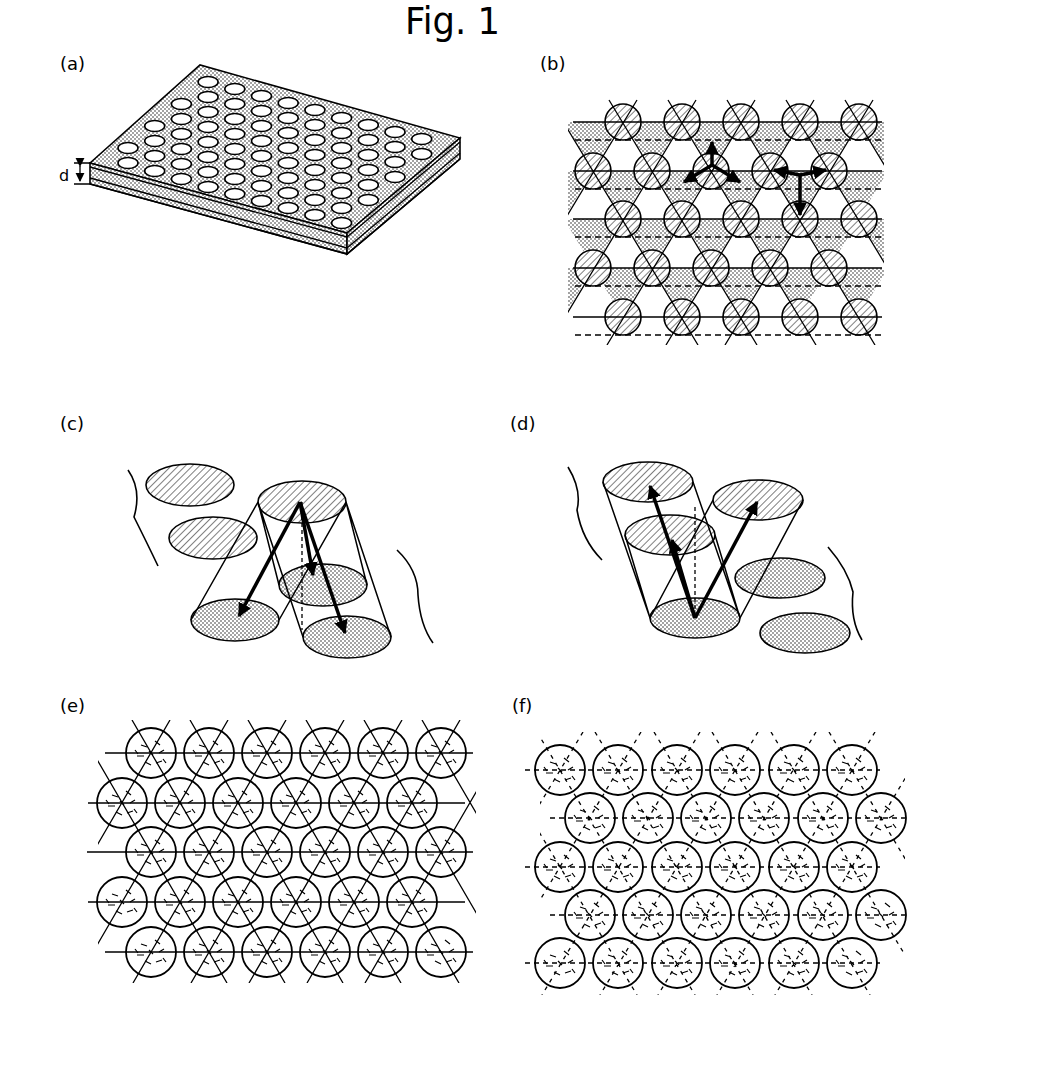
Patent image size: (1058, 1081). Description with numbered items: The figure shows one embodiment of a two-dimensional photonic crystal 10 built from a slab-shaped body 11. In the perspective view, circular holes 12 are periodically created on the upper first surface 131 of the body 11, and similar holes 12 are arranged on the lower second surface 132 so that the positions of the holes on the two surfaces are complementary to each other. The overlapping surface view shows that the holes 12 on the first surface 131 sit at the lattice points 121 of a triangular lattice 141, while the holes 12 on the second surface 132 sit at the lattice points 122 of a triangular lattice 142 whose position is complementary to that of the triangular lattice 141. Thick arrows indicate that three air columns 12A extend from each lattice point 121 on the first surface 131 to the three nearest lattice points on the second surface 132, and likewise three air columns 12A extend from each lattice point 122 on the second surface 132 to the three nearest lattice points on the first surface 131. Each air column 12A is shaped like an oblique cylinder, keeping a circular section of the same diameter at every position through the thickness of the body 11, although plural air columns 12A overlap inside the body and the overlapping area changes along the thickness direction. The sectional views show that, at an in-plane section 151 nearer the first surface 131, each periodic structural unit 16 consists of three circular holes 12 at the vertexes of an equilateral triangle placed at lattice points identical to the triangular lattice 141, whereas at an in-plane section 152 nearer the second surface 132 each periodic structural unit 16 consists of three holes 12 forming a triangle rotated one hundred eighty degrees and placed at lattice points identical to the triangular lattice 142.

The two-dimensional photonic crystal 10 is at (440, 249).
The body 11 is at (458, 142).
The holes 12 is at (340, 115).
The air columns 12A is at (207, 587).
The periodic structural unit 16 is at (462, 829).
The lattice points 121 is at (692, 100).
The lattice points 122 is at (770, 138).
The first surface 131 is at (440, 138).
The second surface 132 is at (212, 220).
The triangular lattice 141 is at (580, 320).
The triangular lattice 142 is at (585, 336).
The in-plane section 151 is at (453, 168).
The in-plane section 152 is at (437, 176).